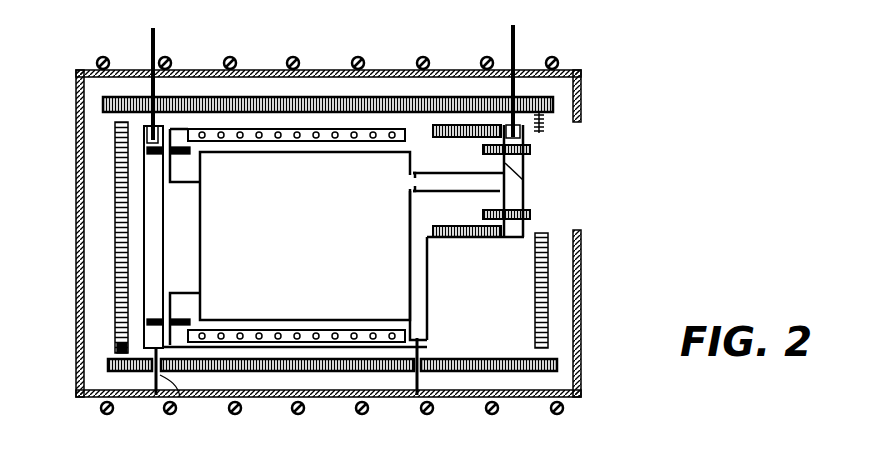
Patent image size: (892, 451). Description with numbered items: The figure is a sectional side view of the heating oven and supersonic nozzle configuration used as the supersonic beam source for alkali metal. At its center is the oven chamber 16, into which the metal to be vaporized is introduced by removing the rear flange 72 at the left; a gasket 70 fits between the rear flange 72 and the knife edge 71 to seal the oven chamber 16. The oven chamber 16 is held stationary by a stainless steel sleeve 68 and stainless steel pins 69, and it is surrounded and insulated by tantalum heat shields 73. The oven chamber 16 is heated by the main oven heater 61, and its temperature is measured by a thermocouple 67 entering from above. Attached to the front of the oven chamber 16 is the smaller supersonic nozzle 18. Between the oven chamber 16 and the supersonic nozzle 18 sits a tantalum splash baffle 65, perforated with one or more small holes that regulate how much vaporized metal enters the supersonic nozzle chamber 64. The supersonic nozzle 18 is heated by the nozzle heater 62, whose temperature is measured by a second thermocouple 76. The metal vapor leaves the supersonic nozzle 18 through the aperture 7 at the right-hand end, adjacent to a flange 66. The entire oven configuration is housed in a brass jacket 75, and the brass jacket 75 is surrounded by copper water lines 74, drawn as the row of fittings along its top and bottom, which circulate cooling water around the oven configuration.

The aperture 7 is at (523, 180).
The oven chamber 16 is at (300, 236).
The supersonic nozzle 18 is at (453, 182).
The main oven heater 61 is at (207, 130).
The nozzle heater 62 is at (468, 238).
The supersonic nozzle chamber 64 is at (482, 183).
The tantalum splash baffle 65 is at (408, 160).
The flange 66 is at (513, 162).
The thermocouple 67 is at (153, 28).
The stainless steel sleeve 68 is at (545, 128).
The stainless steel pins 69 is at (180, 397).
The gasket 70 is at (163, 198).
The knife edge 71 is at (163, 167).
The rear flange 72 is at (153, 238).
The tantalum heat shields 73 is at (535, 300).
The copper water lines 74 is at (423, 60).
The brass jacket 75 is at (583, 360).
The thermocouple 76 is at (514, 26).